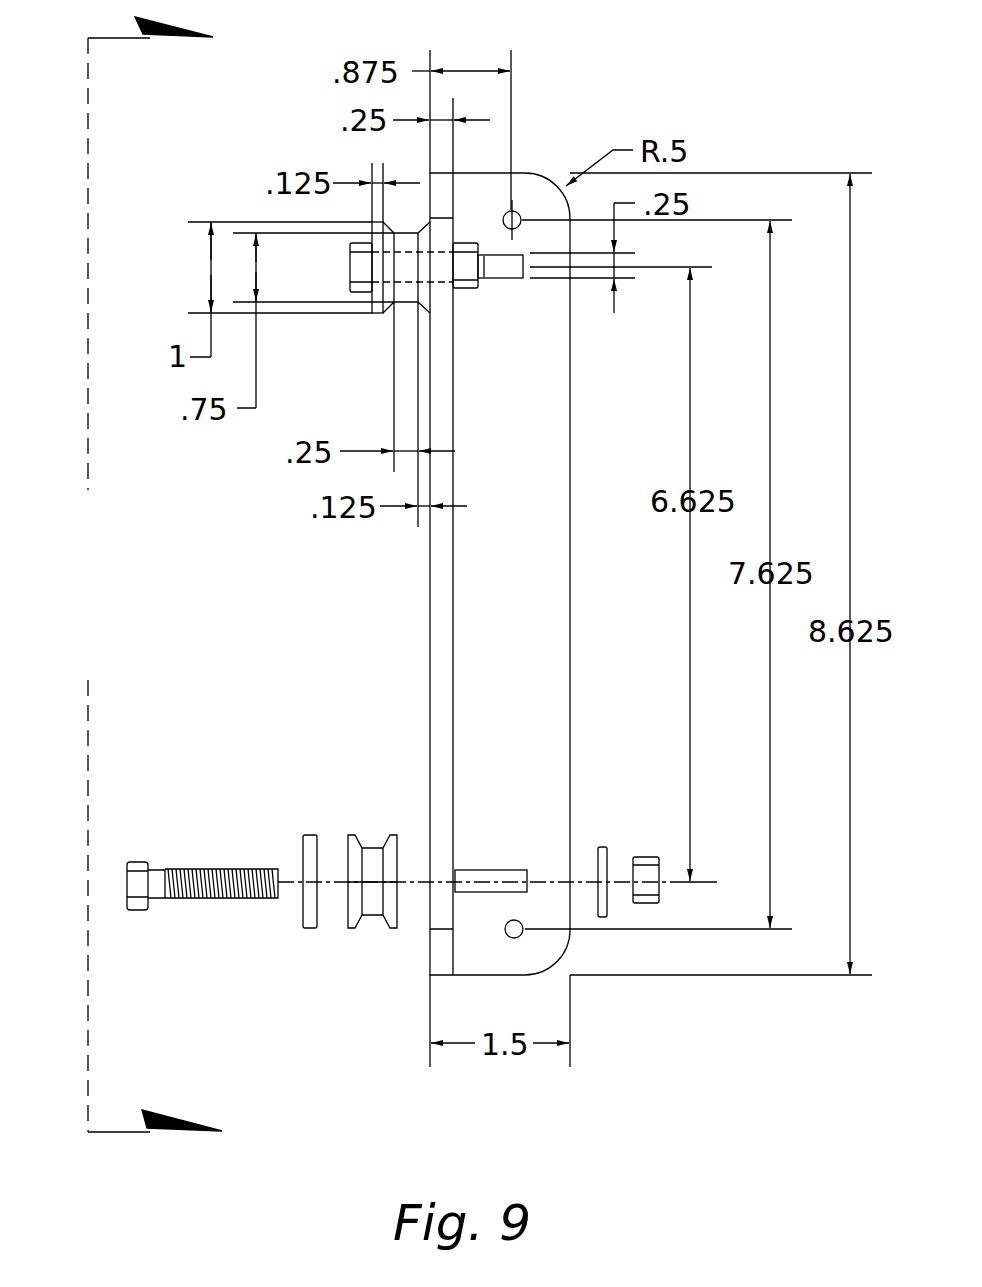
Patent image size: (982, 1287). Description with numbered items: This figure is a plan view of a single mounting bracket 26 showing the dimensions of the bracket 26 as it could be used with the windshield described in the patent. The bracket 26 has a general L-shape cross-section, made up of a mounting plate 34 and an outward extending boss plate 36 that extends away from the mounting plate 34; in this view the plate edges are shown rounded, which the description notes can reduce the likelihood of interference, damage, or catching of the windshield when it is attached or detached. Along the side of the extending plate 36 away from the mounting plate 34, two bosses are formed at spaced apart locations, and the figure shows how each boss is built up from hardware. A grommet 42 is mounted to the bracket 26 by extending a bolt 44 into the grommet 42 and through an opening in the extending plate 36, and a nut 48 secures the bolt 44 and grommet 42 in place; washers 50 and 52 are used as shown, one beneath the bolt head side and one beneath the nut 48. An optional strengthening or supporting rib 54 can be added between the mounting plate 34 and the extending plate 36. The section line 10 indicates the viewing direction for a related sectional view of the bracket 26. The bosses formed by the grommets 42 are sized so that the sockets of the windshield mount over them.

The section line 10 is at (187, 588).
The bracket 26 is at (574, 443).
The mounting plate 34 is at (520, 623).
The outward extending boss plate 36 is at (433, 722).
The grommet 42 is at (407, 305).
The bolt 44 is at (350, 268).
The nut 48 is at (463, 290).
The washer 50 is at (307, 928).
The washer 52 is at (602, 847).
The strengthening or supporting rib 54 is at (505, 279).